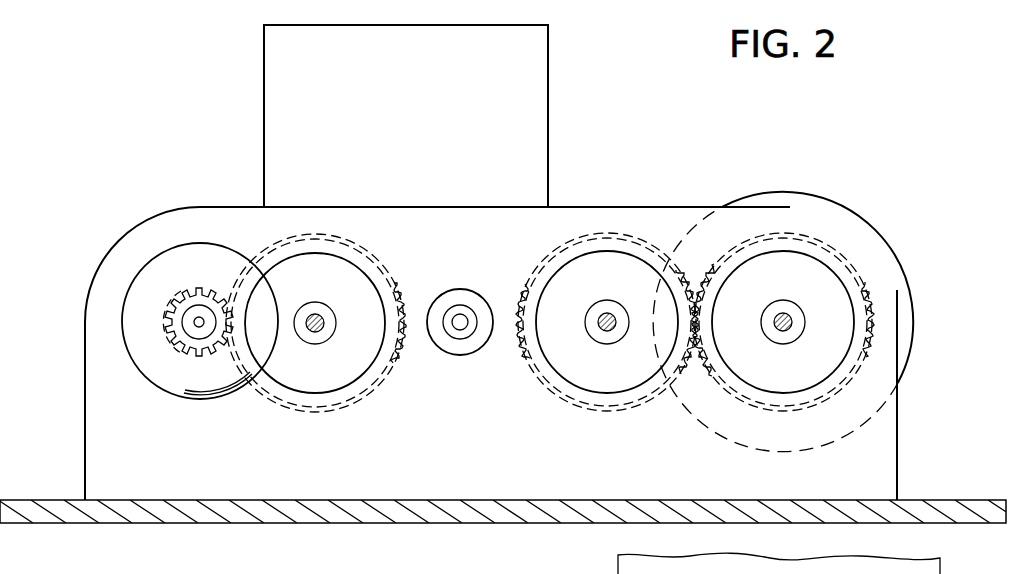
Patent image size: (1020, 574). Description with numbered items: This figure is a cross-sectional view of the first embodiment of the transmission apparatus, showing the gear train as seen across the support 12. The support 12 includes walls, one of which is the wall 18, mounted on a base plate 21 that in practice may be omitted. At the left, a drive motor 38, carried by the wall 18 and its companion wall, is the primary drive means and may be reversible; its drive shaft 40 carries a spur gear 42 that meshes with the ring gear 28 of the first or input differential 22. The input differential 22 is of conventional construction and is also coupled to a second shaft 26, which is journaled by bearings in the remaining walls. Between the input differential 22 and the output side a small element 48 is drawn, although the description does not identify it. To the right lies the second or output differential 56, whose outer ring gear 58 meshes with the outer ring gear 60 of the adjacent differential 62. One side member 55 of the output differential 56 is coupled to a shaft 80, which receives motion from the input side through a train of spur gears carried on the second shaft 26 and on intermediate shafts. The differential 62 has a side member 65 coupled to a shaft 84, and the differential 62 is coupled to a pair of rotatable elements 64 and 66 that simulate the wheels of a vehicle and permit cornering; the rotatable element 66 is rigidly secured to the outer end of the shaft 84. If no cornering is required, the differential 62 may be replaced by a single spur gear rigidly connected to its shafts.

The support 12 is at (909, 458).
The wall 18 is at (898, 417).
The base plate 21 is at (950, 500).
The first or input differential 22 is at (351, 411).
The second shaft 26 is at (328, 332).
The ring gear 28 is at (395, 292).
The drive motor 38 is at (132, 285).
The drive shaft 40 is at (197, 324).
The spur gear 42 is at (165, 328).
The idler roller 48 is at (461, 318).
The side member 55 is at (580, 373).
The second or output differential 56 is at (637, 230).
The outer ring gear 58 is at (597, 230).
The outer ring gear 60 is at (882, 326).
The differential 62 is at (893, 308).
The rotatable element 64 is at (897, 256).
The side member 65 is at (745, 372).
The rotatable element 66 is at (559, 559).
The shaft 80 is at (607, 312).
The shaft 84 is at (786, 312).